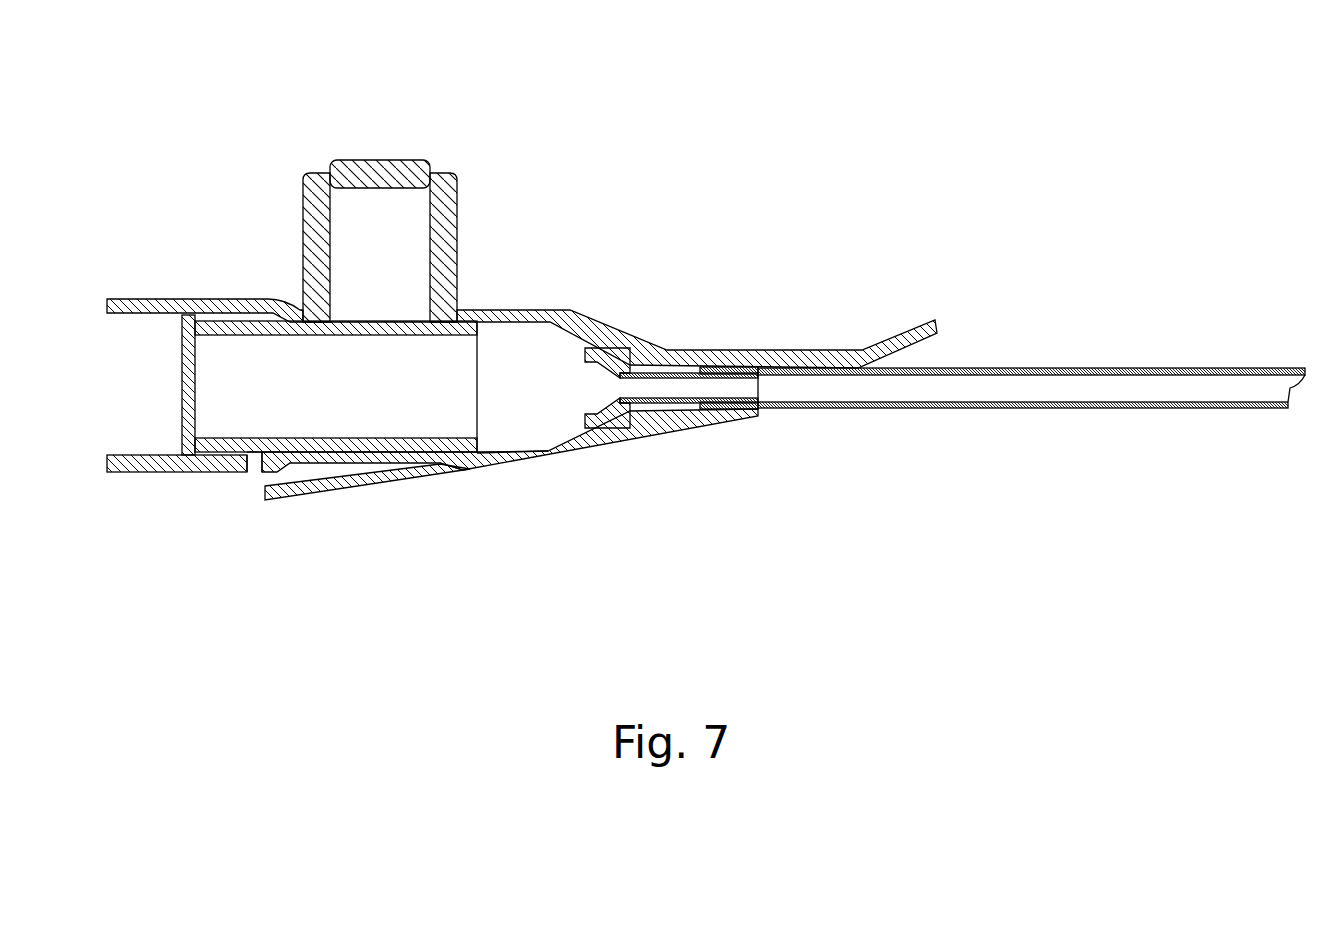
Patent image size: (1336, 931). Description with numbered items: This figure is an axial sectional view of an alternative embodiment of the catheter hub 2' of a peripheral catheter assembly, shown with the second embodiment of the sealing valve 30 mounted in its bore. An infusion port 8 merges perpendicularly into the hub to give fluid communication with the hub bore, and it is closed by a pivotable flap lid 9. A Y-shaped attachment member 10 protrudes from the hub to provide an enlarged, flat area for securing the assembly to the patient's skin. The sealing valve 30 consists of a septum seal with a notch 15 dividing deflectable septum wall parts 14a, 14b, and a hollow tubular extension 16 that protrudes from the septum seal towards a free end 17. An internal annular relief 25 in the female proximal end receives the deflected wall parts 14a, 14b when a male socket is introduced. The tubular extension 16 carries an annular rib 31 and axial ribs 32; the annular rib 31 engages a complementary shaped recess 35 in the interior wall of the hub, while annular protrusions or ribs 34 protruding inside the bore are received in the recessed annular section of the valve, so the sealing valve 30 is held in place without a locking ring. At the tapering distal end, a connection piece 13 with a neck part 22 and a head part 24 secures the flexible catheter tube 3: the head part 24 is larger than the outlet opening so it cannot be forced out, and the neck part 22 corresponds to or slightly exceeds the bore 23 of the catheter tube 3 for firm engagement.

The catheter hub 2' is at (687, 180).
The catheter tube 3 is at (1125, 368).
The infusion port 8 is at (432, 216).
The pivotable flap lid 9 is at (385, 164).
The Y-shaped attachment member 10 is at (377, 488).
The connection piece 13 is at (616, 430).
The septum wall part 14a is at (200, 363).
The septum wall part 14b is at (197, 417).
The notch 15 is at (186, 386).
The tubular extension 16 is at (412, 462).
The free end 17 is at (482, 390).
The neck part 22 is at (660, 394).
The bore 23 is at (722, 401).
The head part 24 is at (618, 348).
The internal annular relief 25 is at (220, 474).
The sealing valve 30 is at (310, 380).
The annular rib 31 is at (272, 470).
The axial rib 32 is at (203, 298).
The annular protrusion 34 is at (250, 474).
The recess 35 is at (258, 464).